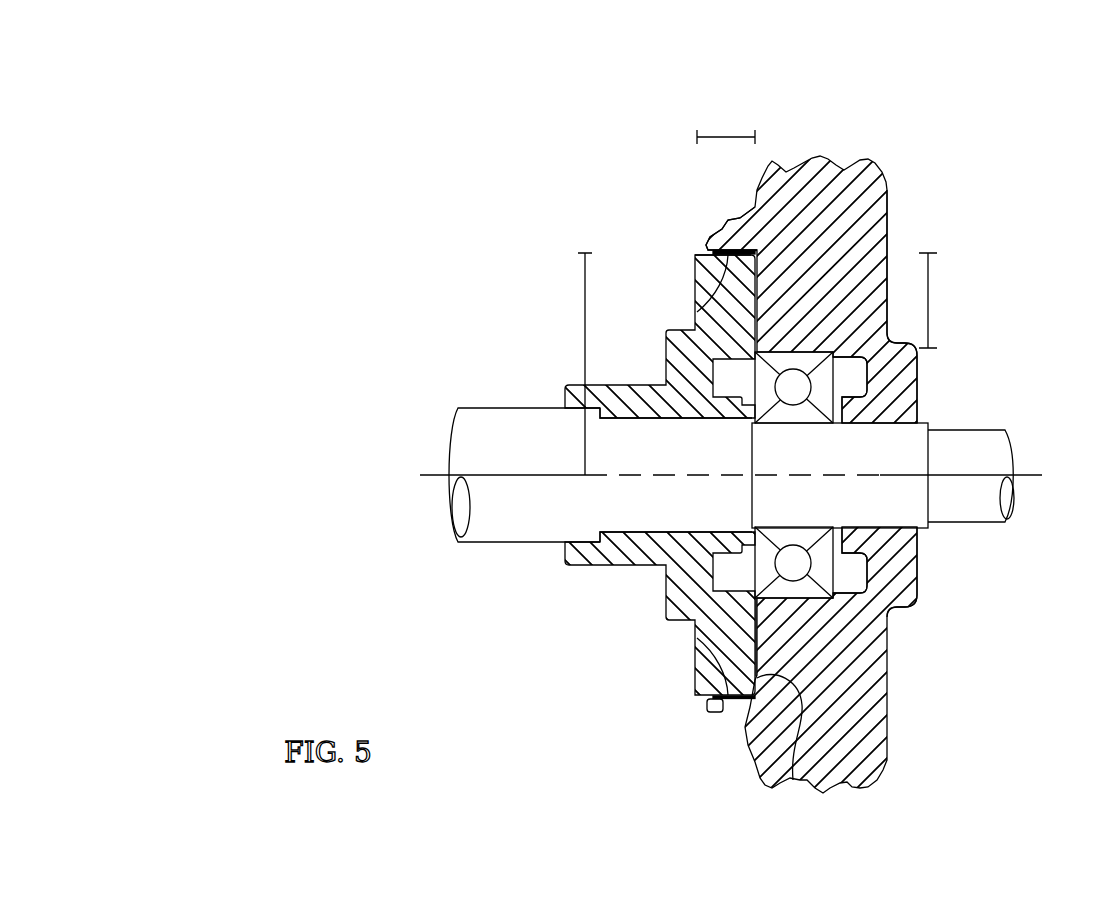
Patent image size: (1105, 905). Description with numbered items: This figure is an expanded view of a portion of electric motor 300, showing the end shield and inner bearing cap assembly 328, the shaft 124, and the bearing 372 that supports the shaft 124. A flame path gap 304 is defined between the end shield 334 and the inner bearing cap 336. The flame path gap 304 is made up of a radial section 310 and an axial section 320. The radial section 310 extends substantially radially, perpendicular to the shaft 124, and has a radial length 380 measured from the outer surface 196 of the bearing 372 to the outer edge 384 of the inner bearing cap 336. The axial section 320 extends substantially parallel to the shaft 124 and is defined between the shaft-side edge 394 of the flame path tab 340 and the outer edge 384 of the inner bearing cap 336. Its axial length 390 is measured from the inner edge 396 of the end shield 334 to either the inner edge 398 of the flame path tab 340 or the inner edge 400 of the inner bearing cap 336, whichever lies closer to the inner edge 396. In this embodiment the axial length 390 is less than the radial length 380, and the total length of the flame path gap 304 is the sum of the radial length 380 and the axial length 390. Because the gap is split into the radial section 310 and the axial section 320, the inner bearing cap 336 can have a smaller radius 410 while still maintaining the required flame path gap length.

The electric motor 300 is at (1026, 82).
The end shield and inner bearing cap assembly 328 is at (750, 98).
The axial length 390 is at (720, 136).
The flame path tab 340 is at (746, 220).
The inner edge of flame path tab 398 is at (748, 250).
The outer edge of inner bearing cap 384 is at (708, 250).
The inner edge of inner bearing cap 400 is at (695, 262).
The inner bearing cap 336 is at (696, 293).
The shaft-side edge of flame path tab 394 is at (695, 312).
The inner edge of end shield 396 is at (762, 287).
The radial length 380 is at (928, 290).
The outer surface of bearing 196 is at (885, 322).
The bearing 372 is at (838, 377).
The radius of inner bearing cap 410 is at (583, 340).
The shaft 124 is at (990, 524).
The flame path gap 304 is at (733, 660).
The axial section 320 is at (722, 717).
The end shield 334 is at (887, 696).
The radial section 310 is at (793, 781).